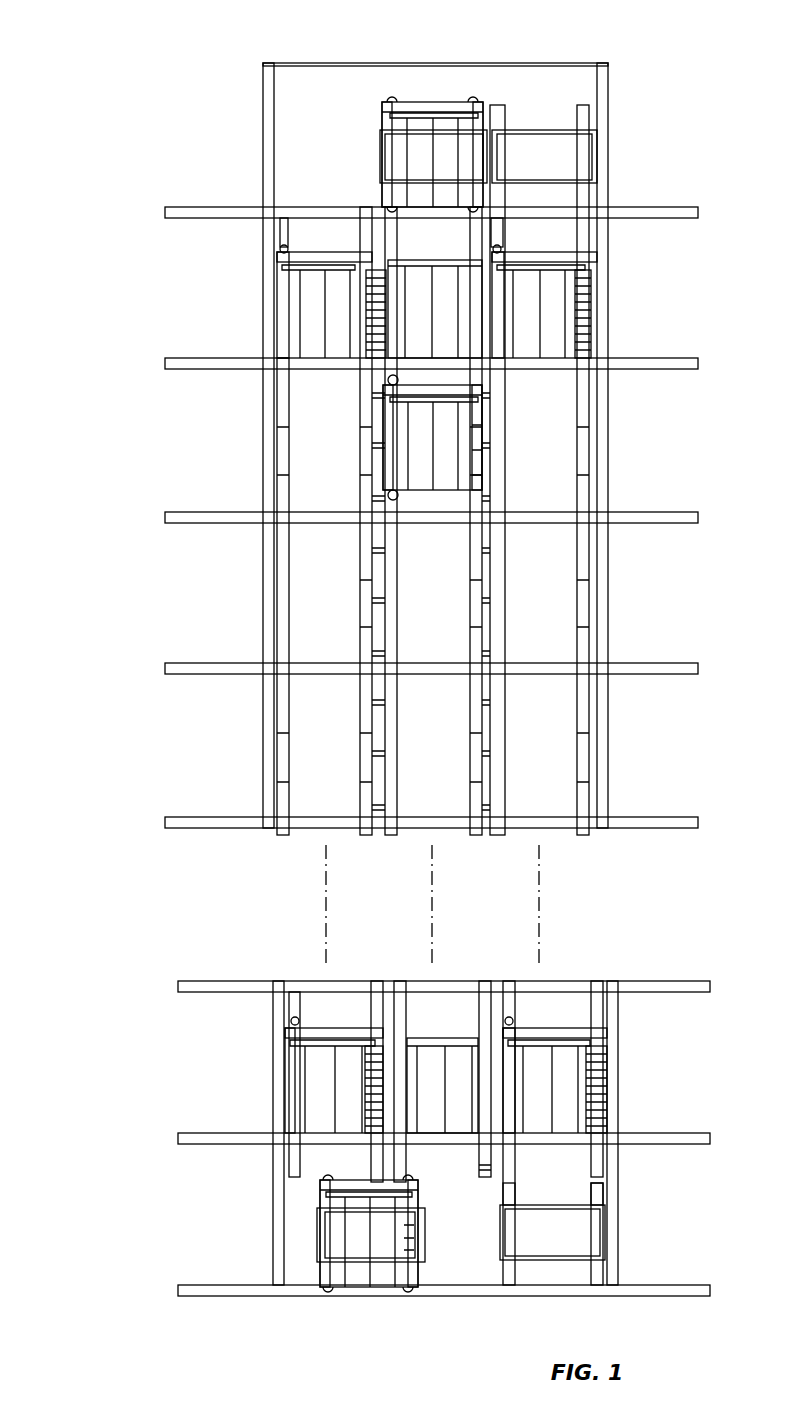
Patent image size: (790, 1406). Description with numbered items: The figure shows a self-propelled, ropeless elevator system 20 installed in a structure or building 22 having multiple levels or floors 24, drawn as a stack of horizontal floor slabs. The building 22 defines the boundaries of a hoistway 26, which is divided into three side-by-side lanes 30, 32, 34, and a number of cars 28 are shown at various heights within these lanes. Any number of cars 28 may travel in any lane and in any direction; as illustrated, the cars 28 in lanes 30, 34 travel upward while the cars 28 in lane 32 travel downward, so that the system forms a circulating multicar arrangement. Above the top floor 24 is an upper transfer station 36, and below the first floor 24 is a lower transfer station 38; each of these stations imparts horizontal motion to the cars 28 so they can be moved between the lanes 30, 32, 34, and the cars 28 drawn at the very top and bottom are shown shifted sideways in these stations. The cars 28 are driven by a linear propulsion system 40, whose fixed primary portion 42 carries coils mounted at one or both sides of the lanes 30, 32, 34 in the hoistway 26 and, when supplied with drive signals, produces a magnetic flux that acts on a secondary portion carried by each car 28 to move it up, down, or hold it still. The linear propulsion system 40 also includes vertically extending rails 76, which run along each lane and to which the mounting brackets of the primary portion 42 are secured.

The elevator system 20 is at (148, 72).
The structure or building 22 is at (263, 88).
The floors 24 is at (185, 510).
The hoistway 26 is at (548, 550).
The car 28 is at (445, 120).
The first lane 30 is at (313, 645).
The second lane 32 is at (423, 645).
The third lane 34 is at (530, 645).
The upper transfer station 36 is at (303, 163).
The lower transfer station 38 is at (298, 1228).
The linear propulsion system 40 is at (421, 1292).
The primary portion 42 is at (405, 1012).
The rail 76 is at (360, 750).